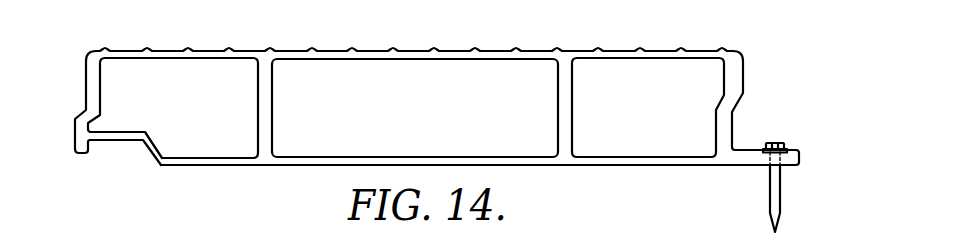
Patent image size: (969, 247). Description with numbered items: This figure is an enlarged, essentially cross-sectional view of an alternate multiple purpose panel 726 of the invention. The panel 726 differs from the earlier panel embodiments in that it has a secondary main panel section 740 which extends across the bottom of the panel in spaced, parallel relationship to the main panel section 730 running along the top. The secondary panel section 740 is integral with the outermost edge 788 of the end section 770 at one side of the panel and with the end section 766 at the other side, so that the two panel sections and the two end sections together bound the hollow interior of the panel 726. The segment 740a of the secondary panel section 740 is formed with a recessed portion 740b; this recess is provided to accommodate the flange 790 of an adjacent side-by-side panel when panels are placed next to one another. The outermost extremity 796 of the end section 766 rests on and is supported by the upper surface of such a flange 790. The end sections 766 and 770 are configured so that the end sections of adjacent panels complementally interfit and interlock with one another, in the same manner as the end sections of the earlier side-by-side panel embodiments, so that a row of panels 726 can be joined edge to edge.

The panel 726 is at (437, 117).
The main panel section 730 is at (285, 53).
The secondary main panel section 740 is at (353, 158).
The segment of secondary panel section 740a is at (232, 164).
The recessed portion 740b is at (144, 148).
The end section 766 is at (110, 87).
The end section 770 is at (712, 91).
The outermost edge 788 is at (730, 167).
The flange 790 is at (803, 157).
The outermost extremity 796 is at (80, 154).